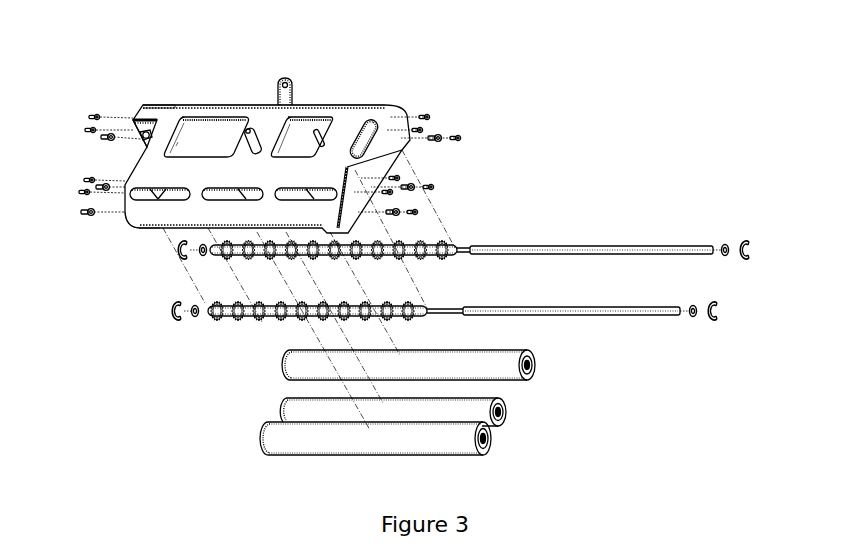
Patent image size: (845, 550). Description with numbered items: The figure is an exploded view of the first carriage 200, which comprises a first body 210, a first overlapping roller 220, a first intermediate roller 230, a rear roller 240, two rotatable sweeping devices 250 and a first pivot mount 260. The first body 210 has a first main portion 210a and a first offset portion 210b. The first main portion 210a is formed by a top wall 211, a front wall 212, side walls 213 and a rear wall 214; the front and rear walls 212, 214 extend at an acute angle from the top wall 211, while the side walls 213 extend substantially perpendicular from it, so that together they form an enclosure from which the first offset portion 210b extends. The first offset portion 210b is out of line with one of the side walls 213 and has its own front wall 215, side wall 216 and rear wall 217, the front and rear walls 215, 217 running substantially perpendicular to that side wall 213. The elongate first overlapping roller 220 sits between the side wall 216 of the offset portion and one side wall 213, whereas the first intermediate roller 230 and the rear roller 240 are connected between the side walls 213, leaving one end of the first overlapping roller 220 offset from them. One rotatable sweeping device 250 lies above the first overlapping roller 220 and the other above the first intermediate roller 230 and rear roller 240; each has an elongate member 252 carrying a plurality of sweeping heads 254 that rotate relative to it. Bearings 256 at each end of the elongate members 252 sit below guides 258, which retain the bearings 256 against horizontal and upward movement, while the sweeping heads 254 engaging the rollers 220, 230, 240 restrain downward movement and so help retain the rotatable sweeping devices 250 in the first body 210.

The first carriage 200 is at (512, 122).
The first body 210 is at (259, 196).
The first main portion 210a is at (84, 254).
The first offset portion 210b is at (123, 78).
The top wall 211 is at (213, 113).
The front wall 212 is at (337, 105).
The side walls 213 is at (122, 205).
The rear wall 214 is at (137, 229).
The front wall 215 is at (152, 103).
The side wall 216 is at (137, 111).
The rear wall 217 is at (140, 145).
The first overlapping roller 220 is at (540, 366).
The first intermediate roller 230 is at (506, 413).
The rear roller 240 is at (492, 440).
The rotatable sweeping devices 250 is at (768, 267).
The elongate member 252 is at (660, 248).
The sweeping heads 254 is at (458, 247).
The bearings 256 is at (206, 255).
The guides 258 is at (181, 253).
The first pivot mount 260 is at (254, 128).